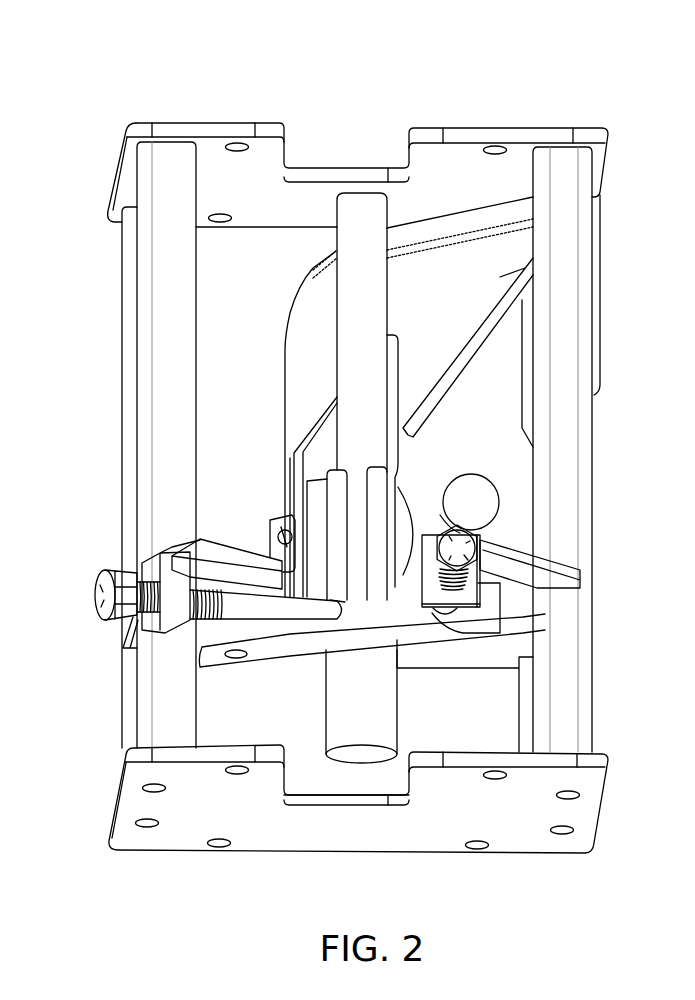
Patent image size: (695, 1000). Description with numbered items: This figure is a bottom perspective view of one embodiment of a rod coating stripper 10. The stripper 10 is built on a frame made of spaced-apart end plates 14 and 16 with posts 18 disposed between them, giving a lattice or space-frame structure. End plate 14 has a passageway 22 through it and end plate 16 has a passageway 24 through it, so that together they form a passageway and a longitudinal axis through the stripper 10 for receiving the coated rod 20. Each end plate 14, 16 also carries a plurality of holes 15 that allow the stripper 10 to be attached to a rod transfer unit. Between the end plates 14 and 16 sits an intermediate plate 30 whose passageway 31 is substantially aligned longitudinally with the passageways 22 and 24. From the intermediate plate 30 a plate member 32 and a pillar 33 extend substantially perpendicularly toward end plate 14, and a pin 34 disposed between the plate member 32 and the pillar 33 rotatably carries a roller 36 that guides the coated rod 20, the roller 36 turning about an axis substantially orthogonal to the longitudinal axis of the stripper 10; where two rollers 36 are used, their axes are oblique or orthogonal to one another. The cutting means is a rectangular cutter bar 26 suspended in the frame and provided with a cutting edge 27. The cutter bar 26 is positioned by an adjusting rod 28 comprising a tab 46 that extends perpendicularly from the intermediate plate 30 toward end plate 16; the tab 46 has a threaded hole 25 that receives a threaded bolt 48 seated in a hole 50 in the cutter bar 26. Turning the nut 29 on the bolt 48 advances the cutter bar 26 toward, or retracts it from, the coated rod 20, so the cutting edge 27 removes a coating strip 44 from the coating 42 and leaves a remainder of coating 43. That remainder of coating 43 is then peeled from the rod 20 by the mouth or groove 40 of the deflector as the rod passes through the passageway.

The rod coating stripper 10 is at (471, 53).
The end plate 14 is at (478, 133).
The holes 15 is at (237, 144).
The end plate 16 is at (573, 843).
The posts 18 is at (567, 178).
The coated rod 20 is at (360, 213).
The passageway 22 is at (385, 133).
The passageway 24 is at (383, 780).
The threaded hole 25 is at (157, 567).
The cutter bar 26 is at (447, 650).
The cutting edge 27 is at (367, 620).
The adjusting rod 28 is at (109, 568).
The nut 29 is at (88, 602).
The intermediate plate 30 is at (227, 552).
The passageway 31 is at (268, 515).
The plate member 32 is at (300, 475).
The pillar 33 is at (383, 583).
The pin 34 is at (266, 530).
The roller 36 is at (303, 490).
The groove 40 is at (390, 400).
The coating 42 is at (527, 703).
The remainder of coating 43 is at (440, 520).
The coating strip 44 is at (393, 467).
The tab 46 is at (175, 610).
The threaded bolt 48 is at (243, 608).
The hole 50 is at (300, 662).